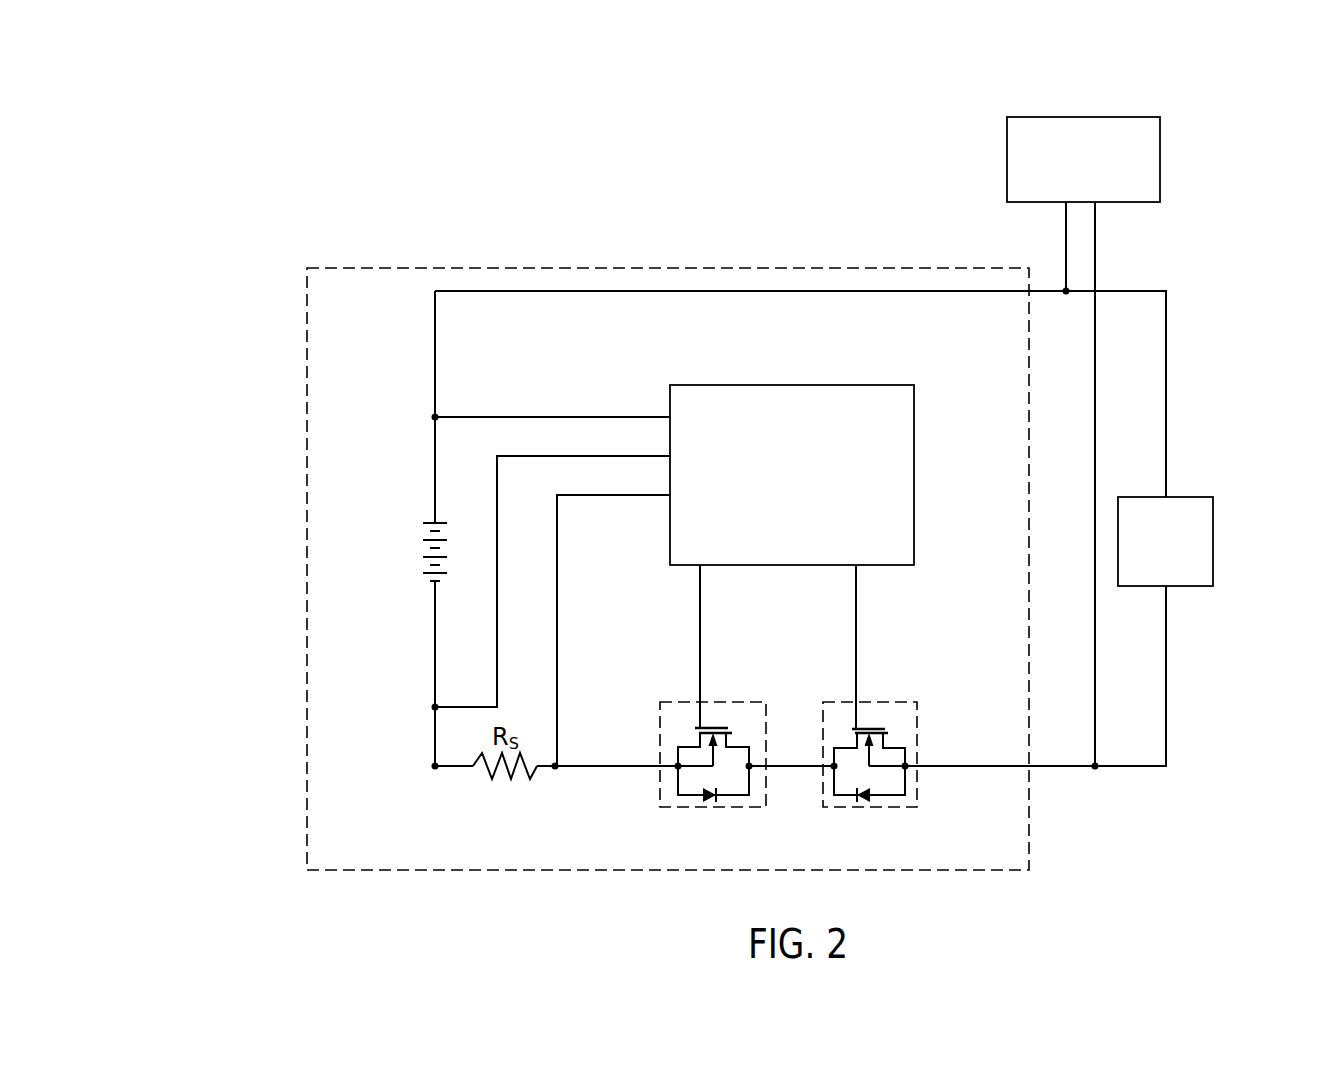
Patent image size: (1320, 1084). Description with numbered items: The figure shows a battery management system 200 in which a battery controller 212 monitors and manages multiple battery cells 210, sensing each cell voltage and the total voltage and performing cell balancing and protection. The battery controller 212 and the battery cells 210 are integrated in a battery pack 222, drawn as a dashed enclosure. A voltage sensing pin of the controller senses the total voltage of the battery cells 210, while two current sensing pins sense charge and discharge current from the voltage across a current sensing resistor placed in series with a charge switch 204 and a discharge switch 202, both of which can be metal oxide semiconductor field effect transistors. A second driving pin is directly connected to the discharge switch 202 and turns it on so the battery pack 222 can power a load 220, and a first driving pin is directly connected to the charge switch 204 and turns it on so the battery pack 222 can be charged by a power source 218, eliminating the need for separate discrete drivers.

The battery management system 200 is at (240, 124).
The discharge switch 202 is at (687, 701).
The charge switch 204 is at (875, 701).
The battery cells 210 is at (432, 523).
The battery controller 212 is at (914, 437).
The power source 218 is at (1130, 204).
The load 220 is at (1195, 496).
The battery pack 222 is at (425, 267).